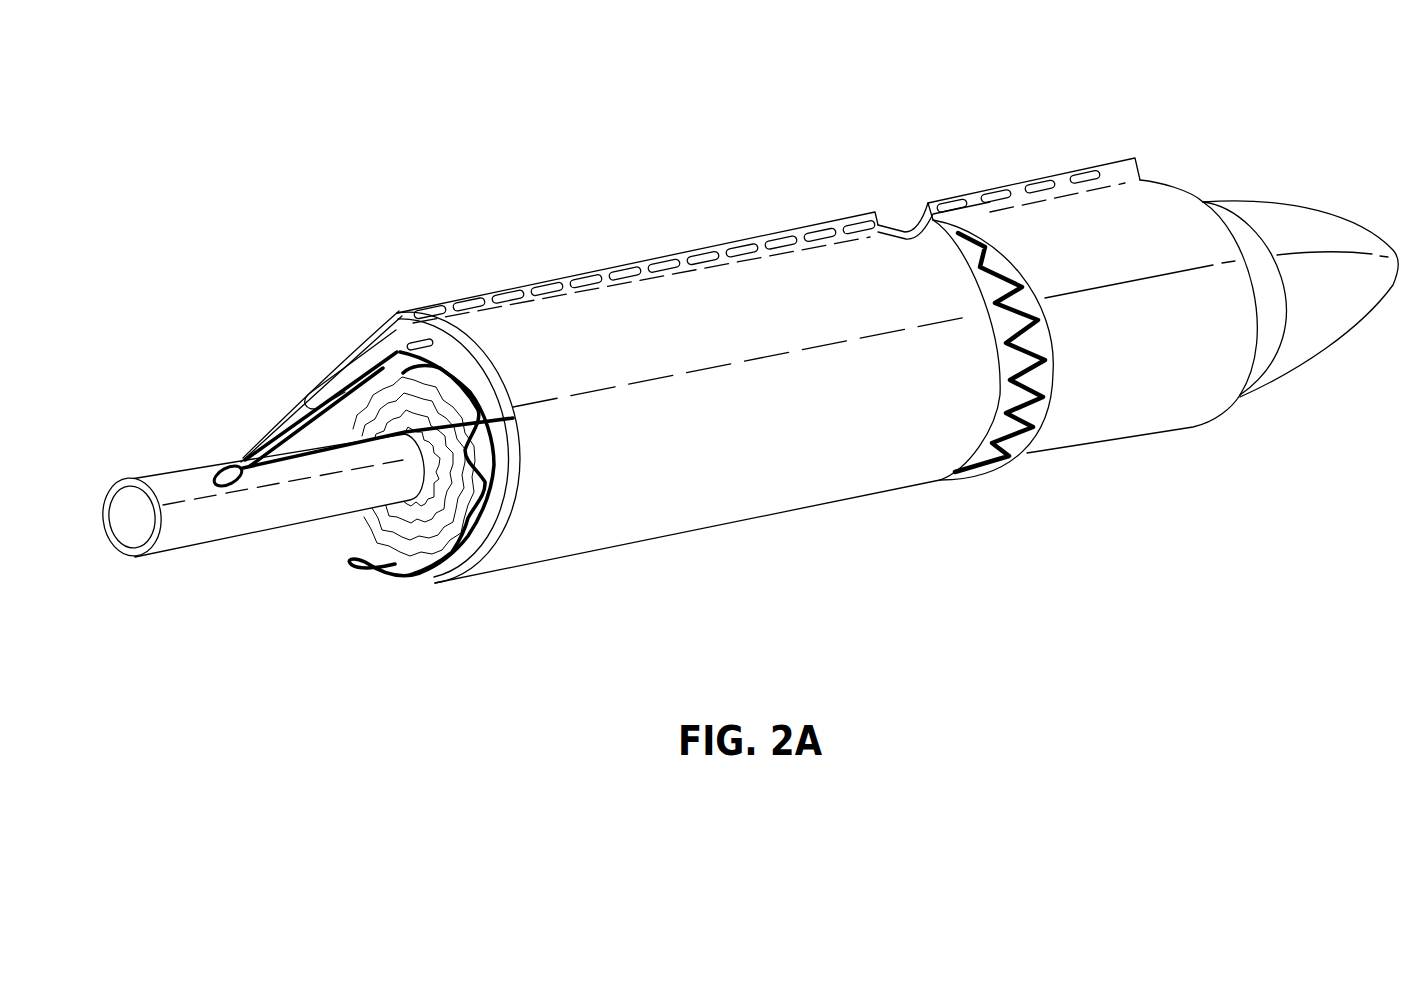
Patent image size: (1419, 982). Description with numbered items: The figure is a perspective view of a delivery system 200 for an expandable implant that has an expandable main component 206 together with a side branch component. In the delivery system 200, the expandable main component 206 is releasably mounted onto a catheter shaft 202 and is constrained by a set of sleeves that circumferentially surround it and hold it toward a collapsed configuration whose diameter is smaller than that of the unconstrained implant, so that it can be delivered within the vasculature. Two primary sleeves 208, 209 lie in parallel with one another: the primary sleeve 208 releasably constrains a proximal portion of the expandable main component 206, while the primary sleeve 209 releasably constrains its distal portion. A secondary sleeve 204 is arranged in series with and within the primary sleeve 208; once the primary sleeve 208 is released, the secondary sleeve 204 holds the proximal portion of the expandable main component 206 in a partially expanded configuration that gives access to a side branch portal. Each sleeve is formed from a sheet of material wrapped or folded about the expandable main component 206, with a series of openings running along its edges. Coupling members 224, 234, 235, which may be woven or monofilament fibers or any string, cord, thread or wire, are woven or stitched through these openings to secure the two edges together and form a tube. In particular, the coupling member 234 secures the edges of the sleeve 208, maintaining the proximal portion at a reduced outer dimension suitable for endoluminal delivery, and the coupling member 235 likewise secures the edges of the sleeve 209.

The delivery system 200 is at (555, 213).
The catheter shaft 202 is at (192, 535).
The secondary sleeve 204 is at (480, 537).
The expandable main component 206 is at (400, 548).
The primary sleeve 208 is at (823, 470).
The primary sleeve 209 is at (1120, 413).
The coupling member 224 is at (268, 445).
The coupling member 234 is at (318, 382).
The coupling member 235 is at (905, 240).